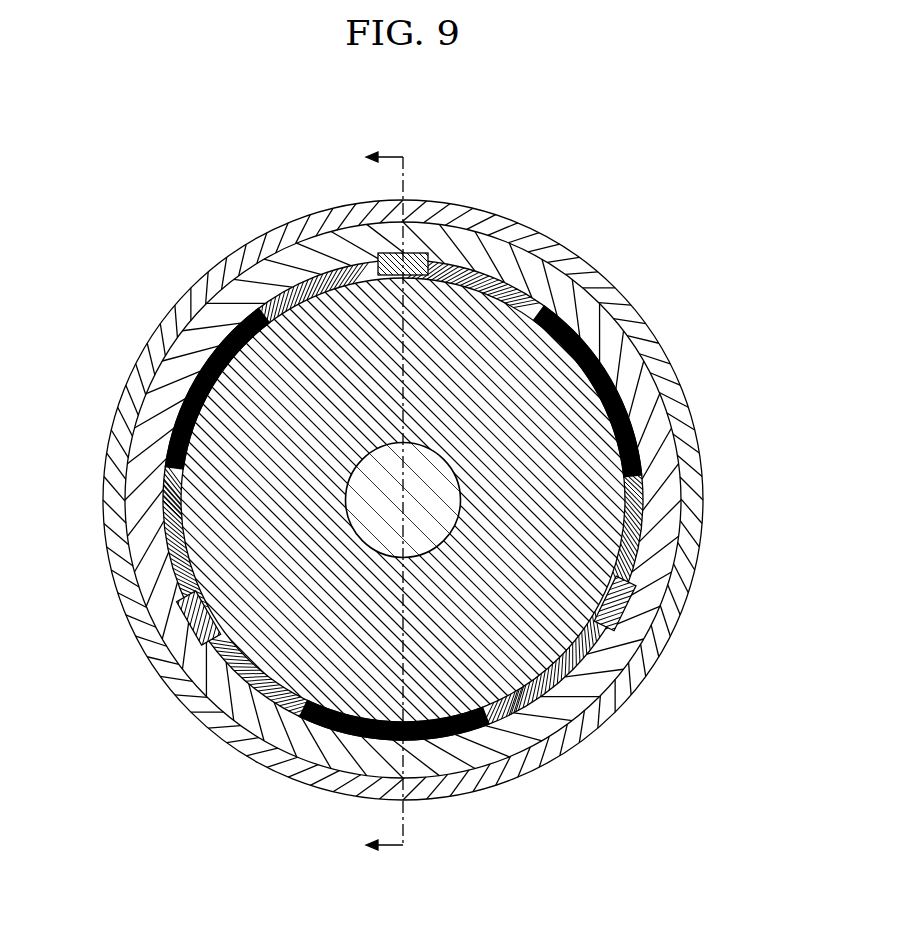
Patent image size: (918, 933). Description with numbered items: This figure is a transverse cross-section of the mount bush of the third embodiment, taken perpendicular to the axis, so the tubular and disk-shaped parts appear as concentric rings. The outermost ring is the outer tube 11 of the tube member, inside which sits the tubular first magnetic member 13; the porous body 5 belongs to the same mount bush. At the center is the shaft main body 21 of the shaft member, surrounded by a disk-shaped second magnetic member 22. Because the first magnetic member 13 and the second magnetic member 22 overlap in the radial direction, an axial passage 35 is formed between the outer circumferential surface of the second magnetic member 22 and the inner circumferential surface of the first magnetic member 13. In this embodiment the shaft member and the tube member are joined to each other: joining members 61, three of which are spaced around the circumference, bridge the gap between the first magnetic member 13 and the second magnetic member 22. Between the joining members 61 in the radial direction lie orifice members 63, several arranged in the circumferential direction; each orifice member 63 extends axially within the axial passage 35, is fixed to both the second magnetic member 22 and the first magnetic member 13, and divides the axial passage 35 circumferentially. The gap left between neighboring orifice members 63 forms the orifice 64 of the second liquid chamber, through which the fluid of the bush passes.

The porous body 5 is at (410, 492).
The outer tube 11 is at (668, 374).
The first magnetic member 13 is at (667, 507).
The shaft main body 21 is at (385, 462).
The second magnetic member 22 is at (552, 352).
The axial passage 35 is at (472, 733).
The joining member 61 is at (620, 612).
The orifice member 63 is at (163, 512).
The orifice 64 is at (170, 423).